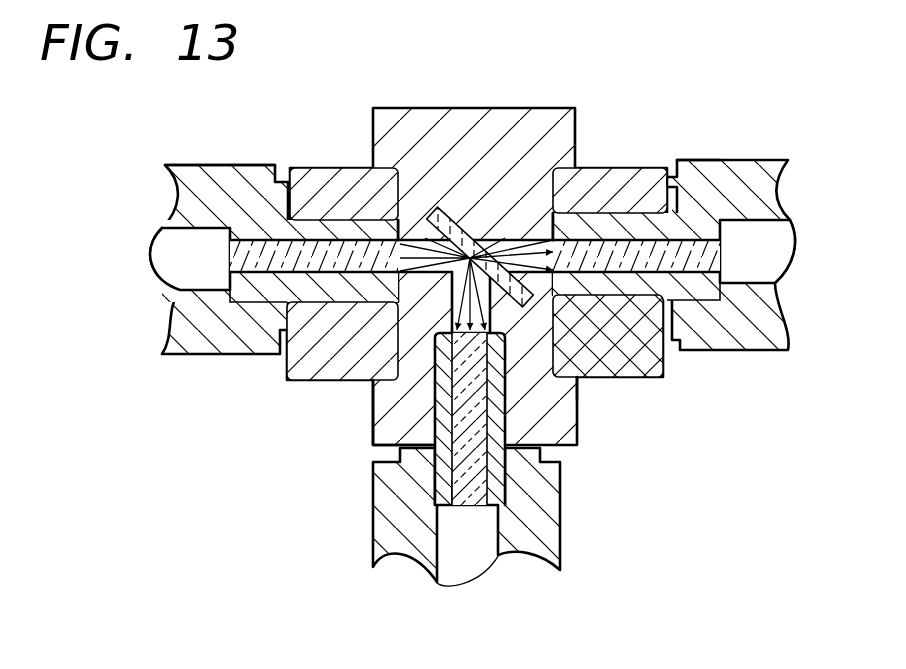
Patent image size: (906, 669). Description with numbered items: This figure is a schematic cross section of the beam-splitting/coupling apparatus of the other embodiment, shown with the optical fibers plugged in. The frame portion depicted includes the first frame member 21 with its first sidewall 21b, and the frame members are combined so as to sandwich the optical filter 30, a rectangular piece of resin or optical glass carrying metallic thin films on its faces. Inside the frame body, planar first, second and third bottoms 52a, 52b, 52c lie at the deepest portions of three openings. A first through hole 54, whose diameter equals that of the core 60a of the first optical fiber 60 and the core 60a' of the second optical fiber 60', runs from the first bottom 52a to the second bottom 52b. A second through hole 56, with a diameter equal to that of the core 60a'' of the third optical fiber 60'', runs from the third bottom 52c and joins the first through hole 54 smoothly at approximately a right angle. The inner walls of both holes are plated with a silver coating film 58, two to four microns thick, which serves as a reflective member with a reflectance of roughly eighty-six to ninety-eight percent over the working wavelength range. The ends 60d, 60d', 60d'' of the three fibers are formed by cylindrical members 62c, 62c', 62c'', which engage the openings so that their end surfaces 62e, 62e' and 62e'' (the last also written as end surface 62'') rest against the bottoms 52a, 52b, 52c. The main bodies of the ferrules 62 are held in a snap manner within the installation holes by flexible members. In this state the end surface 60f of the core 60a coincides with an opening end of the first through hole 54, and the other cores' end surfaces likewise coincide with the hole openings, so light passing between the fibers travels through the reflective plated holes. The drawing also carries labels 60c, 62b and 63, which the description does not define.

The first frame member 21 is at (390, 140).
The first sidewall 21b is at (374, 430).
The optical filter 30 is at (465, 236).
The first bottom 52a is at (403, 238).
The second bottom 52b is at (652, 372).
The third bottom 52c is at (445, 432).
The first through hole 54 is at (526, 212).
The second through hole 56 is at (380, 383).
The Ag coating film 58 is at (520, 232).
The first optical fiber 60 is at (236, 261).
The second optical fiber 60' is at (696, 256).
The third optical fiber 60'' is at (501, 482).
The core 60a is at (254, 362).
The core 60a' is at (698, 346).
The core 60a'' is at (461, 564).
The pipe joint outer surface 60c is at (752, 220).
The end 60d is at (319, 333).
The end 60d' is at (610, 157).
The end 60d'' is at (627, 516).
The end surface 60f is at (320, 355).
The ferrule 62 is at (472, 318).
The end surface 62'' is at (500, 520).
The joint member shoulder 62b is at (296, 180).
The cylindrical member 62c is at (314, 392).
The cylindrical member 62c' is at (636, 203).
The cylindrical member 62c'' is at (469, 419).
The end surface 62e is at (359, 188).
The end surface 62e' is at (594, 141).
The end surface 62e'' is at (657, 451).
The pipe joint nut 63 is at (213, 212).